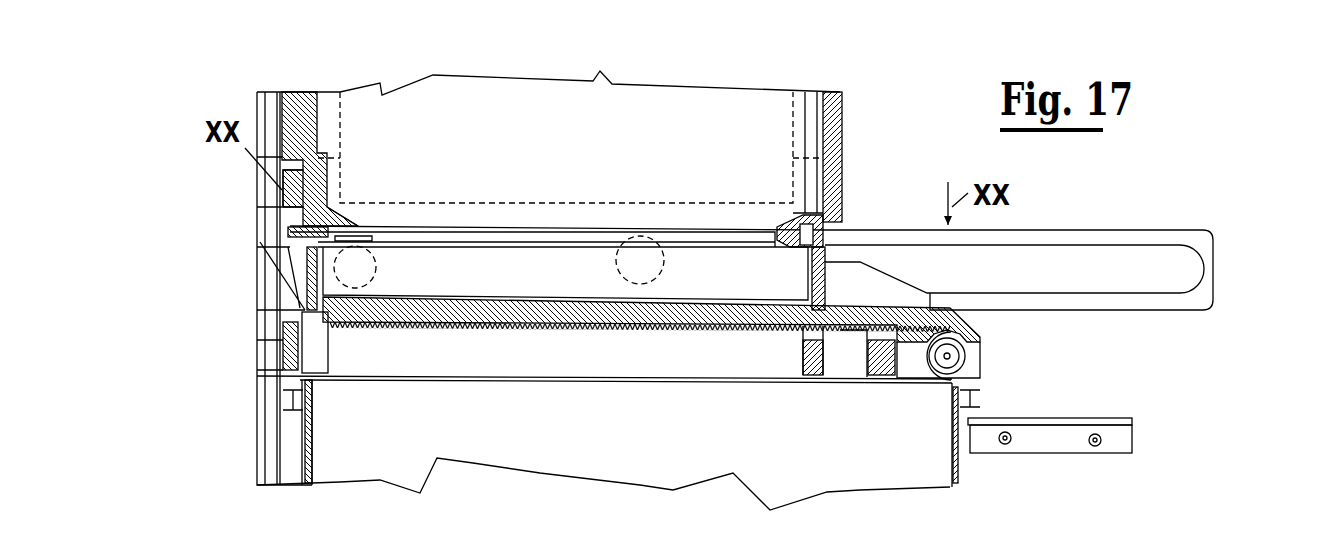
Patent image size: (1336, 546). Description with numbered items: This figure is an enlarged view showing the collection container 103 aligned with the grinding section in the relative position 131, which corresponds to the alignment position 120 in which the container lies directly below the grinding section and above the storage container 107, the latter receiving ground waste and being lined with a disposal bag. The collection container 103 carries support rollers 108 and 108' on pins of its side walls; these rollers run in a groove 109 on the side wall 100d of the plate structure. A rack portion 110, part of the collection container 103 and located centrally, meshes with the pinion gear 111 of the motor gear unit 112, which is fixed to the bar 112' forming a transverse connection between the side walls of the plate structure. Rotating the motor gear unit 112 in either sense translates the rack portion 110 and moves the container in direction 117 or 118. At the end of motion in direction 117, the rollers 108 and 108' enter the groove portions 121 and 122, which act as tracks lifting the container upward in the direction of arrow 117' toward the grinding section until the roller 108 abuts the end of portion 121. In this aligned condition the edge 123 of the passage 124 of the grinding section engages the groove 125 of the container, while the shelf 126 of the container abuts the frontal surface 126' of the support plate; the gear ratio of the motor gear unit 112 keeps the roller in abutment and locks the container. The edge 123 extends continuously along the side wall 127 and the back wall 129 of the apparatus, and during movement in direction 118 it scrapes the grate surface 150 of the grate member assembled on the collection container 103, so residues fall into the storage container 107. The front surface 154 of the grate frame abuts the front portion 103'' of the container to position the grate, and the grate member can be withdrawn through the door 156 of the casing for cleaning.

The side wall 100d is at (490, 545).
The collection container 103 is at (563, 336).
The front portion 103'' is at (368, 368).
The storage container 107 is at (352, 468).
The support roller 108 is at (395, 202).
The support roller 108' is at (685, 351).
The groove 109 is at (1111, 284).
The rack portion 110 is at (550, 330).
The pinion gear 111 is at (968, 357).
The motor gear unit 112 is at (1022, 444).
The bar 112' is at (857, 394).
The direction 117 is at (1211, 175).
The arrow direction 117' is at (545, 115).
The direction 118 is at (1320, 145).
The position 120 is at (238, 192).
The groove portion 121 is at (365, 463).
The groove portion 122 is at (604, 545).
The edge 123 is at (837, 215).
The passage 124 is at (548, 223).
The groove 125 is at (800, 247).
The shelf 126 is at (378, 267).
The frontal surface 126' is at (386, 168).
The side wall 127 is at (605, 220).
The back wall 129 is at (785, 193).
The relative position 131 is at (862, 132).
The grate surface 150 is at (523, 227).
The front surface 154 is at (288, 231).
The door 156 is at (262, 323).